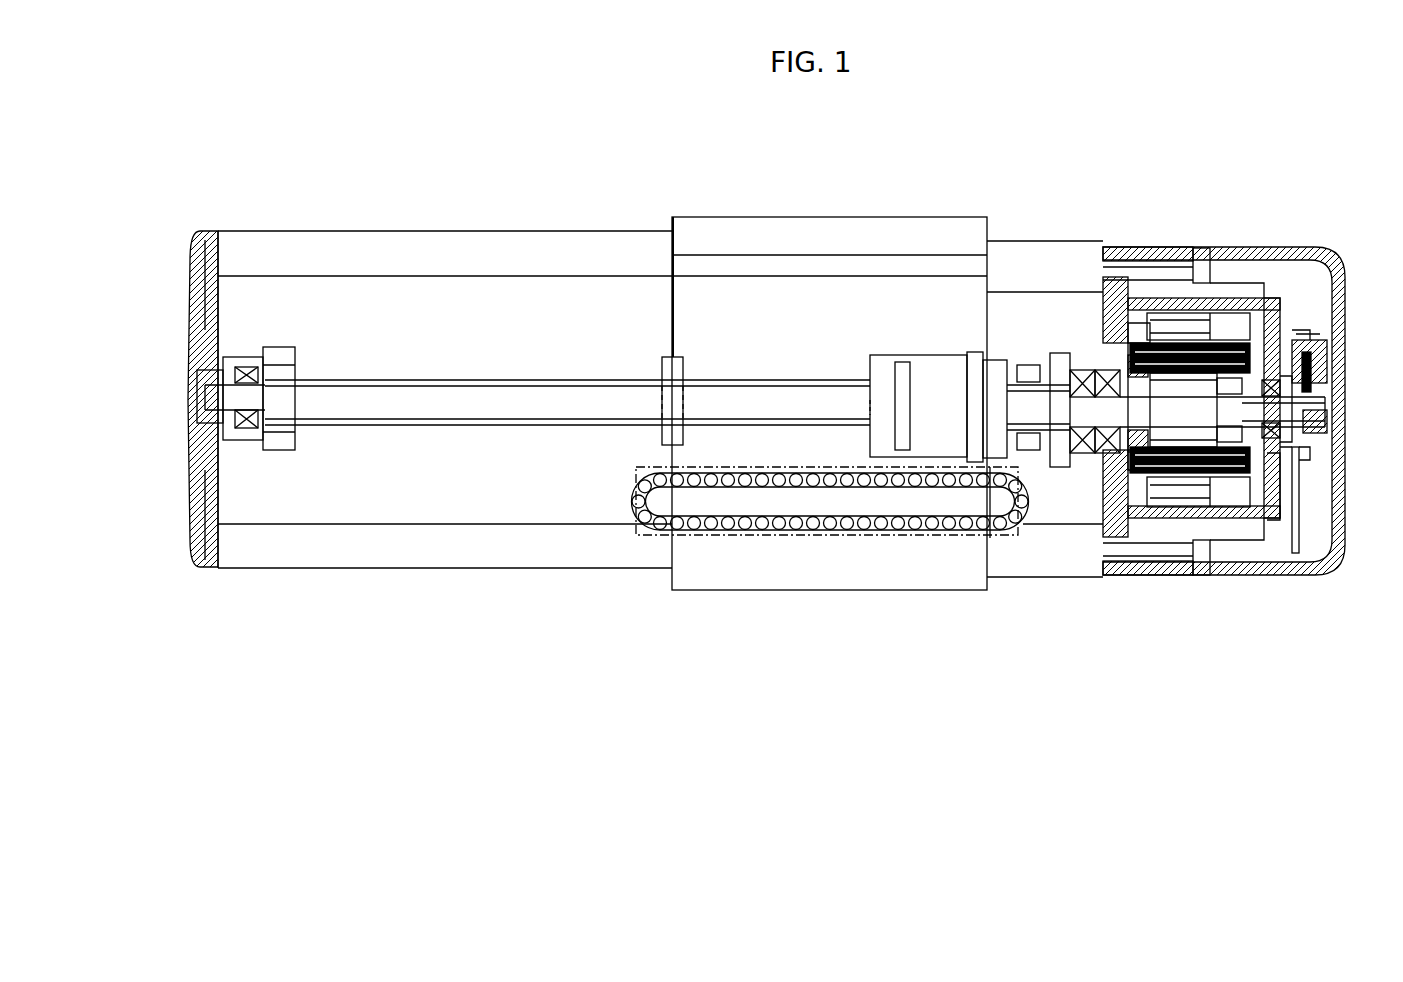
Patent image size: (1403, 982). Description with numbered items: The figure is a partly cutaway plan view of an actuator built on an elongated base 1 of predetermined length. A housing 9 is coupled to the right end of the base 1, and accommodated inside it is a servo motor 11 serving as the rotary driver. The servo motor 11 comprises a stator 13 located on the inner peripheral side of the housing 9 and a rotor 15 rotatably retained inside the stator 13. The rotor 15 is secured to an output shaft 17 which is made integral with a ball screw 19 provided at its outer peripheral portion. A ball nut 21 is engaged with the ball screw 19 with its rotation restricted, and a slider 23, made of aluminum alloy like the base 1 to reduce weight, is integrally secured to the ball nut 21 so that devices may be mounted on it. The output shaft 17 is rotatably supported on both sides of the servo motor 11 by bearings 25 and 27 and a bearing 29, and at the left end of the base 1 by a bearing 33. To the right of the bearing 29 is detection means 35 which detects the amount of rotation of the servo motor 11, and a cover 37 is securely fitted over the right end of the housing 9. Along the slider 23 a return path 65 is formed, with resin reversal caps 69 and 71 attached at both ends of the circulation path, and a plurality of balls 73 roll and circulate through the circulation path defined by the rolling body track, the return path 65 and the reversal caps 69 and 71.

The base 1 is at (486, 570).
The housing 9 is at (1178, 578).
The servo motor 11 is at (1112, 468).
The stator 13 is at (1202, 345).
The rotor 15 is at (1188, 432).
The output shaft 17 is at (1113, 405).
The ball screw 19 is at (597, 427).
The ball nut 21 is at (988, 365).
The slider 23 is at (870, 575).
The bearing 25 is at (1080, 370).
The bearing 27 is at (1118, 362).
The bearing 29 is at (1278, 385).
The bearing 33 is at (243, 442).
The detection means 35 is at (1320, 448).
The cover 37 is at (1342, 364).
The return path 65 is at (757, 528).
The reversal cap 69 is at (990, 545).
The reversal cap 71 is at (636, 527).
The balls 73 is at (672, 530).